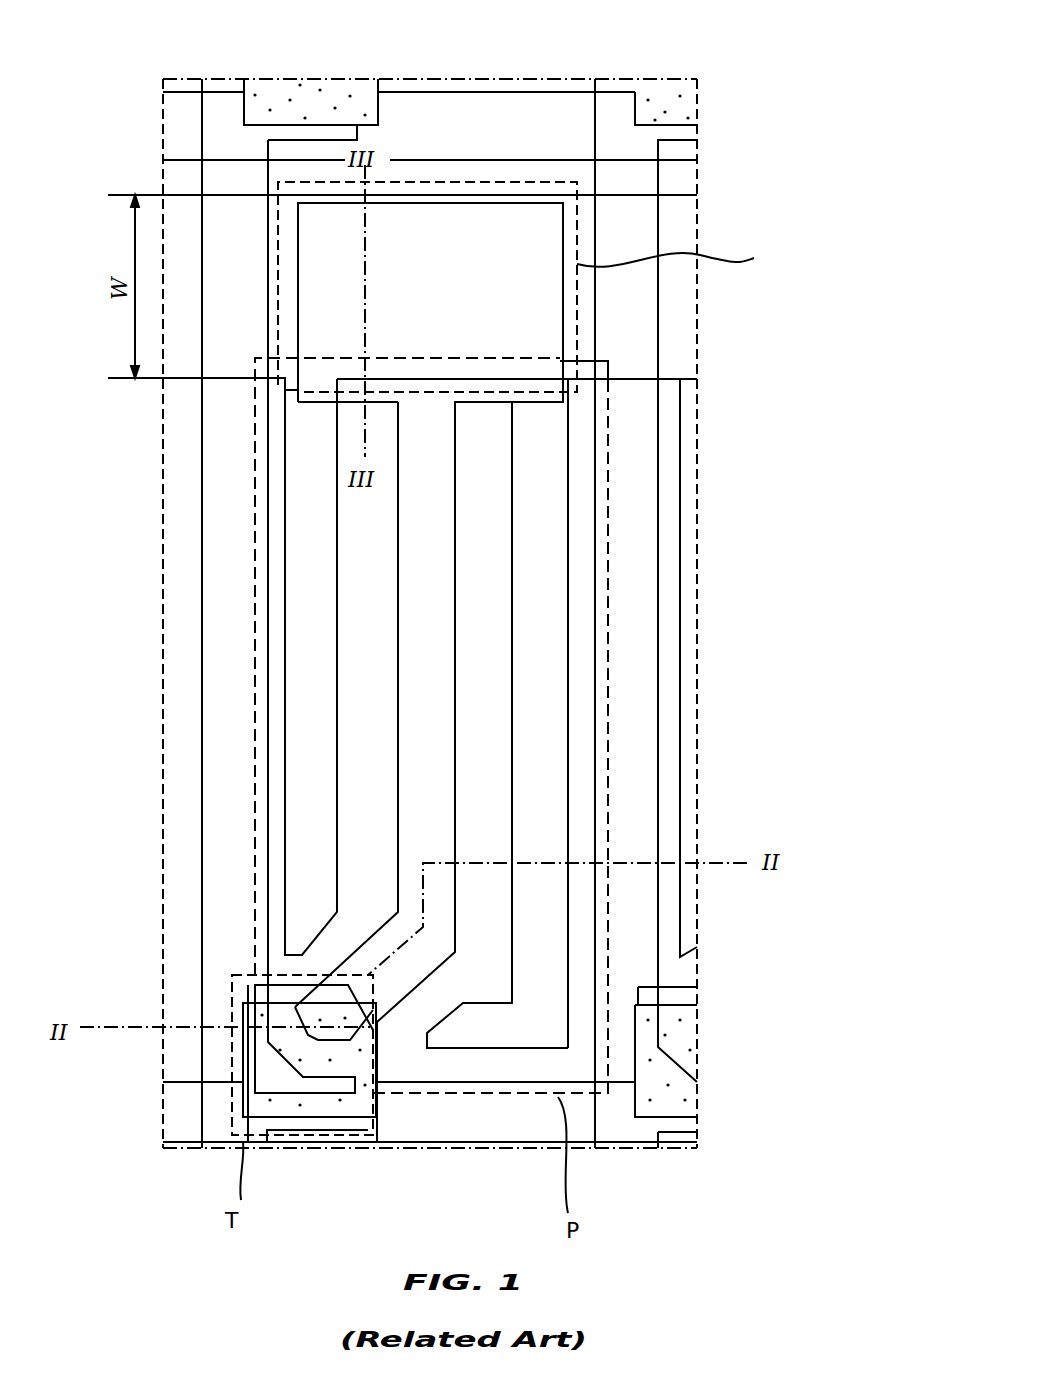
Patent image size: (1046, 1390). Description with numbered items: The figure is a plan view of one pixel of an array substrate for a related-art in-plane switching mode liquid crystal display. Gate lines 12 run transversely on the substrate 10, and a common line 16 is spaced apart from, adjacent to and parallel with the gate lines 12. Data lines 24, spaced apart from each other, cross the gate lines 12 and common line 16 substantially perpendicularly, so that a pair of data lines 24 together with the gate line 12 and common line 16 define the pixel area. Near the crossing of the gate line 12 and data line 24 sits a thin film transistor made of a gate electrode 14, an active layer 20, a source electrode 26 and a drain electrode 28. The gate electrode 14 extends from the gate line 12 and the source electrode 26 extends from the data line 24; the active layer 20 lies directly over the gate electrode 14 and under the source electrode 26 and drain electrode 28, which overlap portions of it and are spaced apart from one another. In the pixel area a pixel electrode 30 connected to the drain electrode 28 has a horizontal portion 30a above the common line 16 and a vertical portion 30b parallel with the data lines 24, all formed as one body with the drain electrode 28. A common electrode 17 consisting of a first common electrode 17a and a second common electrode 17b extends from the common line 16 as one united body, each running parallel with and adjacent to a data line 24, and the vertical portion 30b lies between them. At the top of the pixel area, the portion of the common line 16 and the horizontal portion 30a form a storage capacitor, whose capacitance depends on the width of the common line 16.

The substrate 10 is at (698, 822).
The gate line 12 is at (557, 92).
The gate electrode 14 is at (305, 1005).
The common line 16 is at (500, 190).
The common electrode 17 is at (574, 713).
The first common electrode 17a is at (337, 590).
The second common electrode 17b is at (569, 663).
The active layer 20 is at (297, 1117).
The data line 24 is at (202, 537).
The source electrode 26 is at (328, 1130).
The drain electrode 28 is at (393, 1007).
The pixel electrode 30 is at (590, 672).
The horizontal portion 30a is at (563, 338).
The vertical portion 30b is at (454, 493).